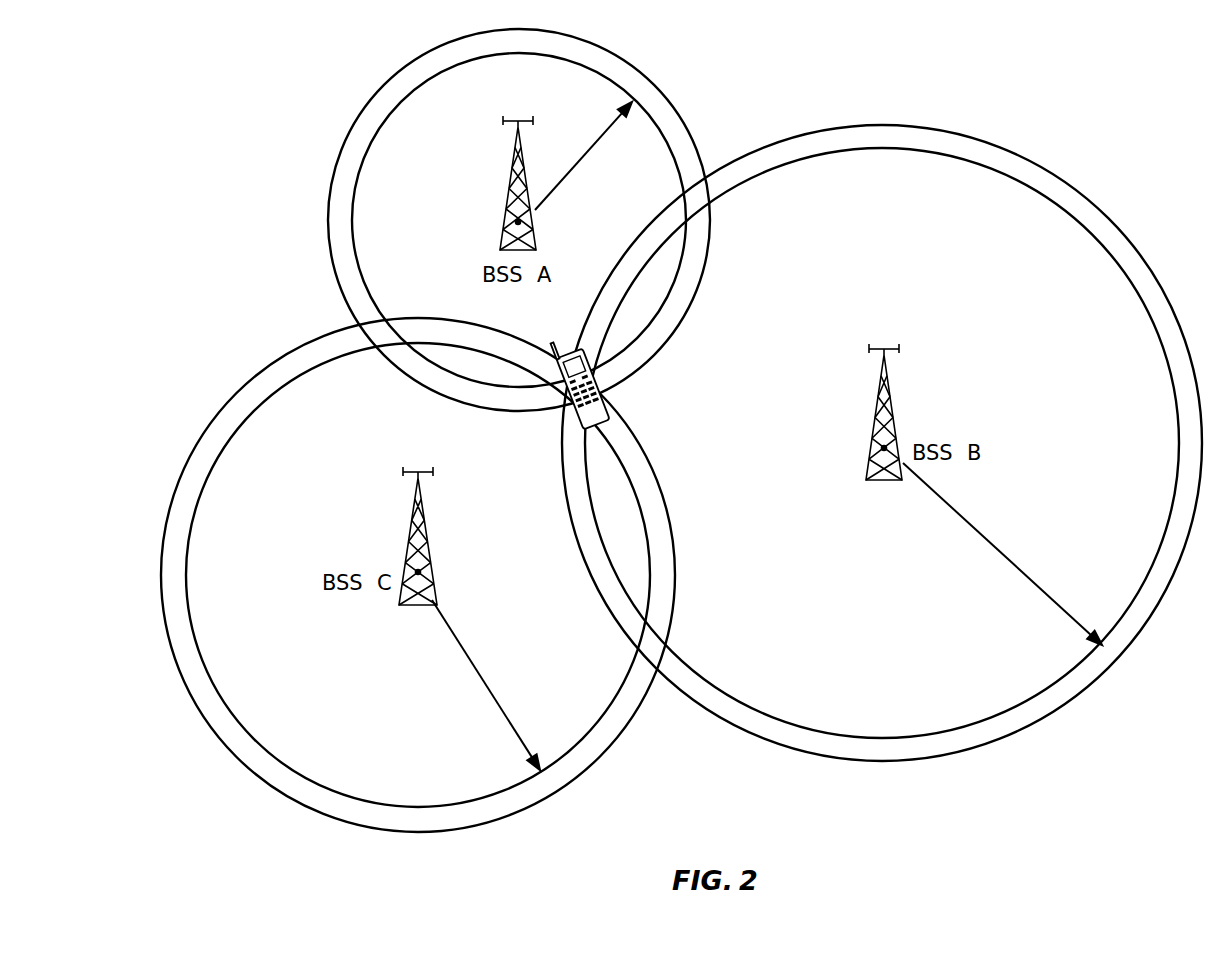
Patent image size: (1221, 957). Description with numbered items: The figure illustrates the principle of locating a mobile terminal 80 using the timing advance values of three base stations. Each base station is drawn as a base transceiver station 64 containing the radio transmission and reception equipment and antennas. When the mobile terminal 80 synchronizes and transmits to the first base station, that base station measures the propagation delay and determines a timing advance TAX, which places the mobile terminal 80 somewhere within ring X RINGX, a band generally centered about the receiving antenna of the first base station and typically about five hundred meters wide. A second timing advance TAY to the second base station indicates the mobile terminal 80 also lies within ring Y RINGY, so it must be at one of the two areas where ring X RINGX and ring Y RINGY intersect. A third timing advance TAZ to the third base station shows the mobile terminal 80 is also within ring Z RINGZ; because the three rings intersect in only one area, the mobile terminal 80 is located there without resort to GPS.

The Base Transceiver Station (BTS) 64 is at (512, 194).
The mobile terminal 80 is at (606, 417).
The ring X RINGX is at (452, 60).
The ring Y RINGY is at (808, 148).
The ring Z RINGZ is at (355, 808).
The timing advance for BSS A TAX is at (585, 154).
The timing advance for BSS B TAY is at (1004, 556).
The timing advance for BSS C TAZ is at (486, 686).